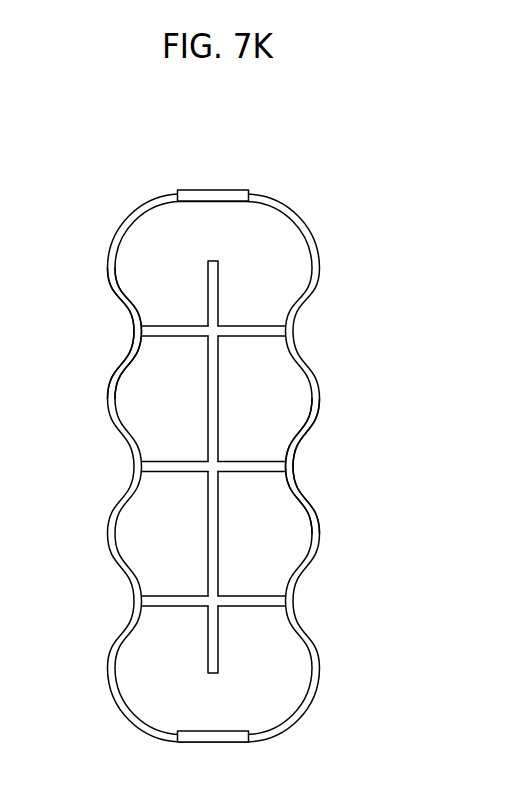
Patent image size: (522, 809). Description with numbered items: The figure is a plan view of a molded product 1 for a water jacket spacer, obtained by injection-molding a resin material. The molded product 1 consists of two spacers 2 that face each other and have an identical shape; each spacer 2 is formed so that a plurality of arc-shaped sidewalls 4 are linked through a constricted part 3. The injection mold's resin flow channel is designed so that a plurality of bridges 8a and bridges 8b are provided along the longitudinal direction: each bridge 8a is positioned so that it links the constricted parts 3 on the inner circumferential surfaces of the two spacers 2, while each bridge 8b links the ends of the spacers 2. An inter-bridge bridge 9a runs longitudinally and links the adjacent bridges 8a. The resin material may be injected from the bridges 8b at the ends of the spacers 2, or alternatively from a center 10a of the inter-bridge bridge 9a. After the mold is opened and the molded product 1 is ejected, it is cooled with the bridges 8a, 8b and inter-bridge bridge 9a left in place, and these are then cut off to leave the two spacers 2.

The molded product 1 is at (338, 195).
The spacer 2 is at (108, 256).
The constricted part 3 is at (134, 330).
The arc-shaped sidewall 4 is at (108, 531).
The bridge 8a is at (243, 337).
The bridge 8b is at (232, 190).
The inter-bridge bridge 9a is at (208, 400).
The center of the inter-bridge bridge 10a is at (213, 462).